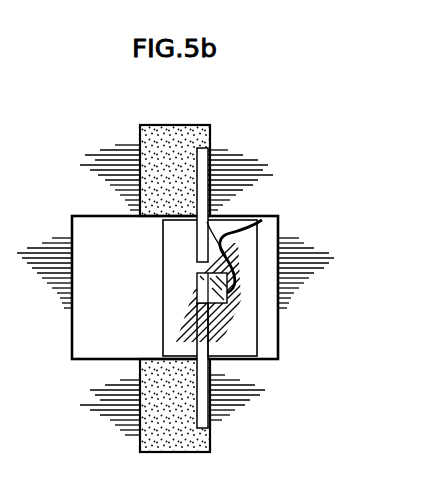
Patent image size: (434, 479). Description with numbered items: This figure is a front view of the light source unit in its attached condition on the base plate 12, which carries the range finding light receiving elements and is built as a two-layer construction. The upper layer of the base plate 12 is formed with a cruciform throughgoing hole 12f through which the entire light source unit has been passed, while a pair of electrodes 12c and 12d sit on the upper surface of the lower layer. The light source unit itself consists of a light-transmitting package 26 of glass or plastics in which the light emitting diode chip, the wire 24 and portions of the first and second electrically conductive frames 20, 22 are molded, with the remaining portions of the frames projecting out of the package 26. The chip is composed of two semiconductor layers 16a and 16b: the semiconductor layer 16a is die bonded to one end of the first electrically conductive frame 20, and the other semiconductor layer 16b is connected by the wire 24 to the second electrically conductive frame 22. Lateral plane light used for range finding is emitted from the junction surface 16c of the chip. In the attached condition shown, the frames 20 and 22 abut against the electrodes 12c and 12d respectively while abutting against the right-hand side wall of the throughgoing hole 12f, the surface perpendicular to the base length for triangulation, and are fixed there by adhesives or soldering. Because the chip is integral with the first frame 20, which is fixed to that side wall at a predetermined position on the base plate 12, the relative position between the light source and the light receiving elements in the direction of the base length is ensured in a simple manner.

The base plate 12 is at (352, 305).
The electrode 12d is at (146, 156).
The electrode 12c is at (160, 397).
The cruciform throughgoing hole 12f is at (281, 341).
The second electrically conductive frame 22 is at (202, 162).
The first electrically conductive frame 20 is at (208, 428).
The wire 24 is at (262, 220).
The package 26 is at (178, 316).
The semiconductor layer 16a is at (210, 305).
The semiconductor layer 16b is at (228, 306).
The junction surface 16c is at (208, 274).